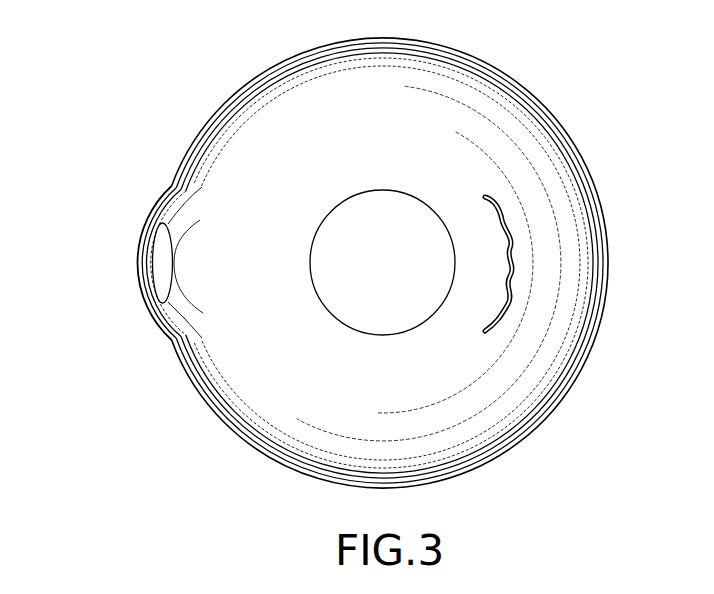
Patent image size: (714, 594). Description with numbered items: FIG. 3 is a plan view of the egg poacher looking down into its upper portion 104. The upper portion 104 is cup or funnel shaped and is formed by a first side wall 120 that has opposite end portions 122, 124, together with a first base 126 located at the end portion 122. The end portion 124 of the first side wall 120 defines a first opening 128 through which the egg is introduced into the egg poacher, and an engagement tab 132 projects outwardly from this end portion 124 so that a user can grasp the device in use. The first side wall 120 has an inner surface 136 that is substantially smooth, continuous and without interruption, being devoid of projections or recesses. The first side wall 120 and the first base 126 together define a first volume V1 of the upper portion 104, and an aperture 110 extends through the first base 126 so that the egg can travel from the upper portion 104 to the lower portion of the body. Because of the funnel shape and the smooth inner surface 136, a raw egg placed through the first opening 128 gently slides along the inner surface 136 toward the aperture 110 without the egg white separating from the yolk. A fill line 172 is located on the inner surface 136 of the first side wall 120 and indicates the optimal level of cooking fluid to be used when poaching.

The upper portion 104 is at (142, 145).
The aperture 110 is at (383, 190).
The first side wall 120 is at (237, 390).
The end portion 122 is at (345, 352).
The end portion 124 is at (453, 88).
The first base 126 is at (313, 205).
The first opening 128 is at (580, 175).
The engagement tab 132 is at (140, 267).
The inner surface 136 is at (295, 93).
The fill line 172 is at (493, 310).
The first volume V1 is at (238, 357).